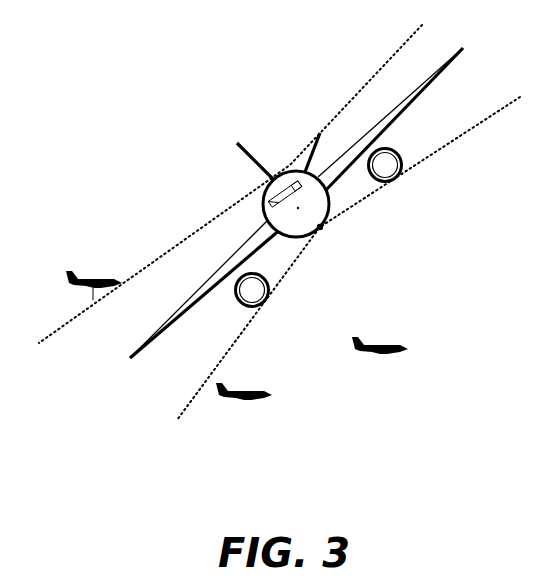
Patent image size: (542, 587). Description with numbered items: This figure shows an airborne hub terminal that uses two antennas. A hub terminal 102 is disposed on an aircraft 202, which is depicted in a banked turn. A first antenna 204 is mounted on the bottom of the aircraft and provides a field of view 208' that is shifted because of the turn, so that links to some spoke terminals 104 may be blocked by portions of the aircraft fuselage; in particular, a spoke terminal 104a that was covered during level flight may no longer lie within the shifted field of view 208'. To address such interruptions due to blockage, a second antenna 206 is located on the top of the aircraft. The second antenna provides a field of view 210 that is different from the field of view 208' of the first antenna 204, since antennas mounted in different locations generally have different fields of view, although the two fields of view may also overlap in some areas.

The hub terminal 102 is at (314, 203).
The spoke terminals 104 is at (93, 282).
The spoke terminal 104a is at (93, 300).
The aircraft 202 is at (418, 110).
The antenna 204 is at (316, 228).
The second antenna 206 is at (267, 185).
The field of view 208' is at (348, 258).
The field of view 210 is at (395, 56).